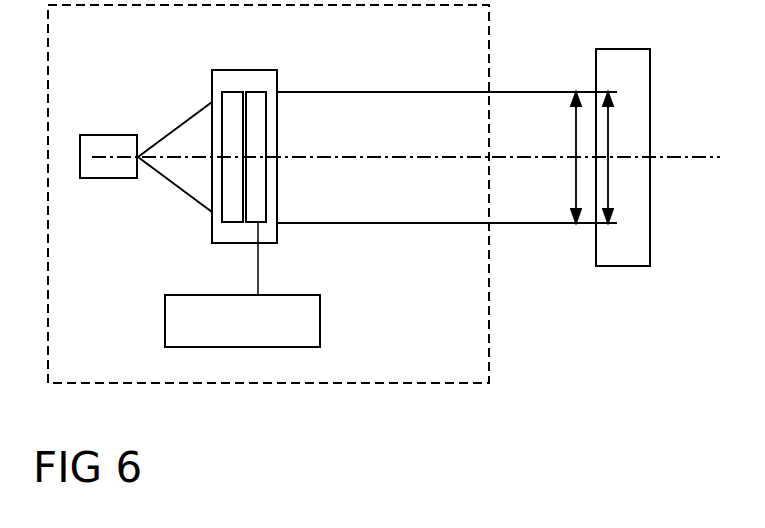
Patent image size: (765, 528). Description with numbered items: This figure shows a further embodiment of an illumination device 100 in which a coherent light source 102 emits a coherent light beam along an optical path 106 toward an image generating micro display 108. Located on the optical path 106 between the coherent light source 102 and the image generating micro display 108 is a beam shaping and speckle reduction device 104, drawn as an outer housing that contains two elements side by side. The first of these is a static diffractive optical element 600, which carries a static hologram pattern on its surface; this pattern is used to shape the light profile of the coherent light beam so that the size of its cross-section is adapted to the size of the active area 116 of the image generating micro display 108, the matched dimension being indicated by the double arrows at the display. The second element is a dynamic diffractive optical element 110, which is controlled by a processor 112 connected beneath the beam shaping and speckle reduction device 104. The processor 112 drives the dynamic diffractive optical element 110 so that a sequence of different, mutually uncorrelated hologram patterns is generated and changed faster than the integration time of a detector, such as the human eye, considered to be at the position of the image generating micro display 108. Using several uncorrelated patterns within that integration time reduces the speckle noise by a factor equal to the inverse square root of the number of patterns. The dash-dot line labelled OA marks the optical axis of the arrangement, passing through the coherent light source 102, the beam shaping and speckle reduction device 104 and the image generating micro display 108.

The illumination device 100 is at (492, 372).
The coherent light source 102 is at (93, 179).
The beam shaping and speckle reduction device 104 is at (278, 232).
The optical path 106 is at (394, 158).
The image generating micro display 108 is at (652, 82).
The dynamic diffractive optical element 110 is at (268, 134).
The processor 112 is at (320, 340).
The active area 116 is at (611, 190).
The static diffractive optical element 600 is at (238, 92).
The optical axis OA is at (683, 160).